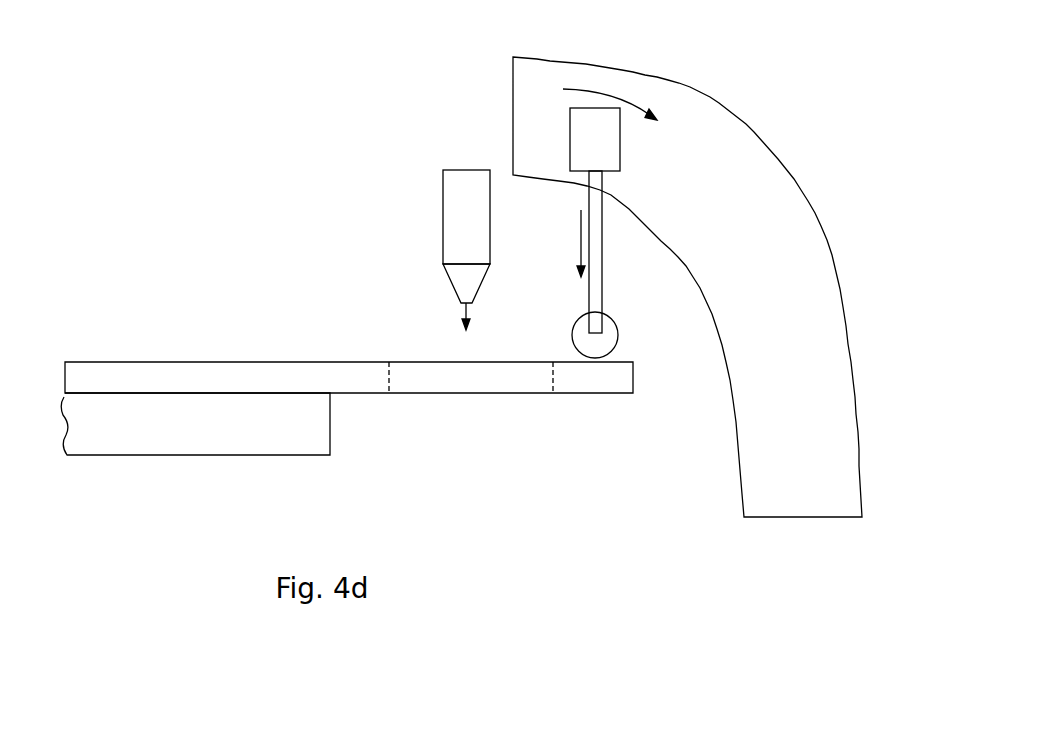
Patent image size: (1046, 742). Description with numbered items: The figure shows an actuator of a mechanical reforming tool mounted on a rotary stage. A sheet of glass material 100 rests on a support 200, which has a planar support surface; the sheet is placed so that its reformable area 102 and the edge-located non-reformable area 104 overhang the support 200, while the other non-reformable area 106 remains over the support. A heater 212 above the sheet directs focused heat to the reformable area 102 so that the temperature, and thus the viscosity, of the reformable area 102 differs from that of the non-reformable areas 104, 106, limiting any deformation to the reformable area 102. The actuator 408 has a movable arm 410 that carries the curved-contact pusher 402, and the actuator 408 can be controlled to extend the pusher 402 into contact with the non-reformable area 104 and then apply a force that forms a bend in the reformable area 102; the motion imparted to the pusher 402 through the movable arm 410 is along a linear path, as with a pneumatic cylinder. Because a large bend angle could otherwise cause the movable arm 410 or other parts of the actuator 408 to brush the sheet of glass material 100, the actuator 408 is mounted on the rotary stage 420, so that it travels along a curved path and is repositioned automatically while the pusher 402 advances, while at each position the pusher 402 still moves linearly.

The sheet of glass material 100 is at (349, 369).
The reformable area 102 is at (462, 384).
The non-reformable area 104 is at (597, 383).
The non-reformable area 106 is at (133, 370).
The support 200 is at (143, 445).
The heater 212 is at (462, 167).
The curved-contact pusher 402 is at (578, 334).
The actuator 408 is at (574, 138).
The movable arm 410 is at (598, 258).
The rotary stage 420 is at (722, 118).